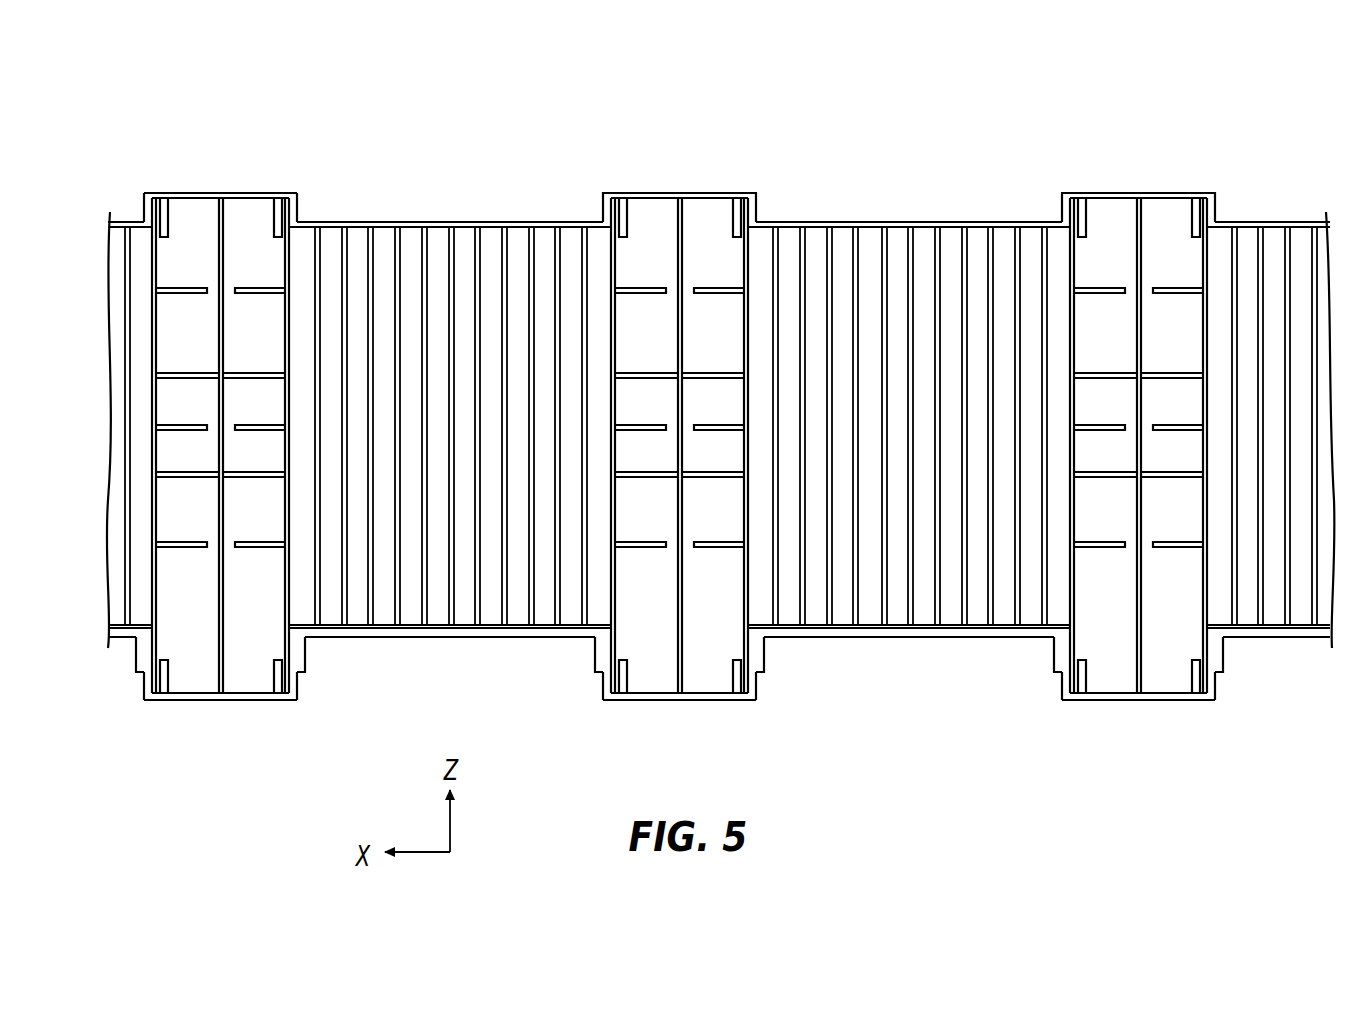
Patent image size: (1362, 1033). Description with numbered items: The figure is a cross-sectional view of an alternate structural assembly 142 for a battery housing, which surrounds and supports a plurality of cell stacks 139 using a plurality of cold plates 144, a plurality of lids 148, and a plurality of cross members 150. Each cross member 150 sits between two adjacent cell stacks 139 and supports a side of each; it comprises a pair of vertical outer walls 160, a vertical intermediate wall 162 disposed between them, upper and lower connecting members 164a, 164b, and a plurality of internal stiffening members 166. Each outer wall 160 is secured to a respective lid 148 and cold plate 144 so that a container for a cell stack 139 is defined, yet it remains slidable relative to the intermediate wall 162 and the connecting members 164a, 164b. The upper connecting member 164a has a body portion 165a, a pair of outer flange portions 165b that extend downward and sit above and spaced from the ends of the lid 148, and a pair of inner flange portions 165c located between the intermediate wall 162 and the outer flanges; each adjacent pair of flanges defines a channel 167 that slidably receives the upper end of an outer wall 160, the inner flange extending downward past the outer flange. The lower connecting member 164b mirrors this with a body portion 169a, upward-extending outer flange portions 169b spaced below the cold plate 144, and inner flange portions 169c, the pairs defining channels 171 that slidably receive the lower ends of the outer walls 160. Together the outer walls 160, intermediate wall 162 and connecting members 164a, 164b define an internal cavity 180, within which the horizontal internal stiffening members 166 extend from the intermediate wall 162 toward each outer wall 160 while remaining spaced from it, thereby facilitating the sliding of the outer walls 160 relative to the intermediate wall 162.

The structural assembly 142 is at (137, 132).
The cold plate 144 is at (470, 655).
The lid 148 is at (428, 205).
The cell stack 139 is at (488, 237).
The cross member 150 is at (267, 717).
The outer wall 160 is at (605, 206).
The intermediate wall 162 is at (683, 223).
The connecting member 164a is at (240, 178).
The connecting member 164b is at (693, 702).
The body portion 165a is at (253, 193).
The outer flange portion 165b is at (143, 206).
The inner flange portion 165c is at (172, 214).
The internal stiffening member 166 is at (185, 376).
The channel 167 is at (158, 193).
The body portion 169a is at (195, 702).
The outer flange portion 169b is at (150, 690).
The inner flange portion 169c is at (173, 693).
The channel 171 is at (149, 688).
The internal cavity 180 is at (718, 215).